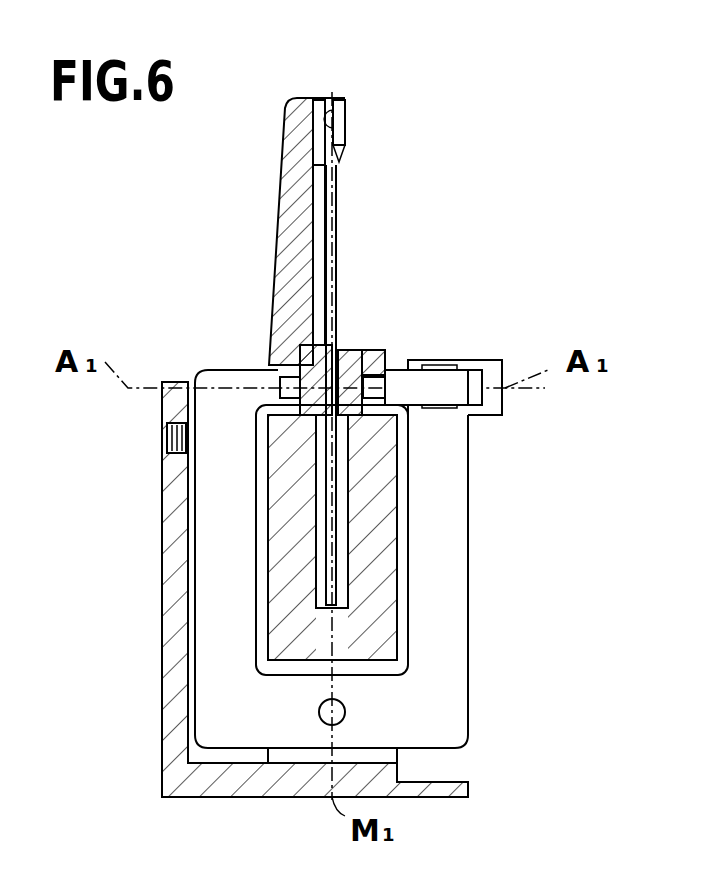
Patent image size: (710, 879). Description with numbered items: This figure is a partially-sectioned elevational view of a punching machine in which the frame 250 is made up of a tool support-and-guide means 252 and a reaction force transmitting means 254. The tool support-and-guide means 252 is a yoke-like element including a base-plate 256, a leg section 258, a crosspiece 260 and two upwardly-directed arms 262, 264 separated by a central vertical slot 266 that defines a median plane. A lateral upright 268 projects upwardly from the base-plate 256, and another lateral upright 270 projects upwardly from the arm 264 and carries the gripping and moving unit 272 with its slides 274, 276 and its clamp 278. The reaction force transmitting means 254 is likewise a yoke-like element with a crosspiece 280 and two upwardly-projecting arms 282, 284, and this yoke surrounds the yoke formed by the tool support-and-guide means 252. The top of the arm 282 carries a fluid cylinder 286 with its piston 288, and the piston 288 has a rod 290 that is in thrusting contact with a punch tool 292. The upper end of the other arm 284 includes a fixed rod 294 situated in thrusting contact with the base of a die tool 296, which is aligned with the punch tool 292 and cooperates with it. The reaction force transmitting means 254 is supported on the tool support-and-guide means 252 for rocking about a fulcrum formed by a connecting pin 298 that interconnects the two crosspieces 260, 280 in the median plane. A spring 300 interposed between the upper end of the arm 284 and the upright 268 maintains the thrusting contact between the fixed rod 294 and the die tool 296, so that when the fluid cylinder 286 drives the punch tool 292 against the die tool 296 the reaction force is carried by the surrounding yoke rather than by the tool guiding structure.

The frame 250 is at (518, 415).
The tool support-and-guide means 252 is at (404, 475).
The reaction force transmitting means 254 is at (493, 566).
The base-plate 256 is at (470, 790).
The leg section 258 is at (378, 668).
The crosspiece 260 is at (345, 625).
The upwardly-directed arm 262 is at (390, 497).
The upwardly-directed arm 264 is at (272, 549).
The central vertical slot 266 is at (318, 582).
The lateral upright 268 is at (167, 690).
The lateral upright 270 is at (295, 158).
The gripping and moving unit 272 is at (380, 124).
The slide 274 is at (318, 100).
The slide 276 is at (347, 98).
The clamp 278 is at (346, 150).
The crosspiece 280 is at (365, 722).
The upwardly-projecting arm 282 is at (466, 528).
The upwardly-projecting arm 284 is at (212, 486).
The fluid cylinder 286 is at (500, 372).
The piston 288 is at (456, 380).
The rod 290 is at (388, 377).
The punch tool 292 is at (357, 348).
The fixed rod 294 is at (292, 378).
The die tool 296 is at (316, 378).
The connecting pin 298 is at (347, 704).
The spring 300 is at (168, 440).